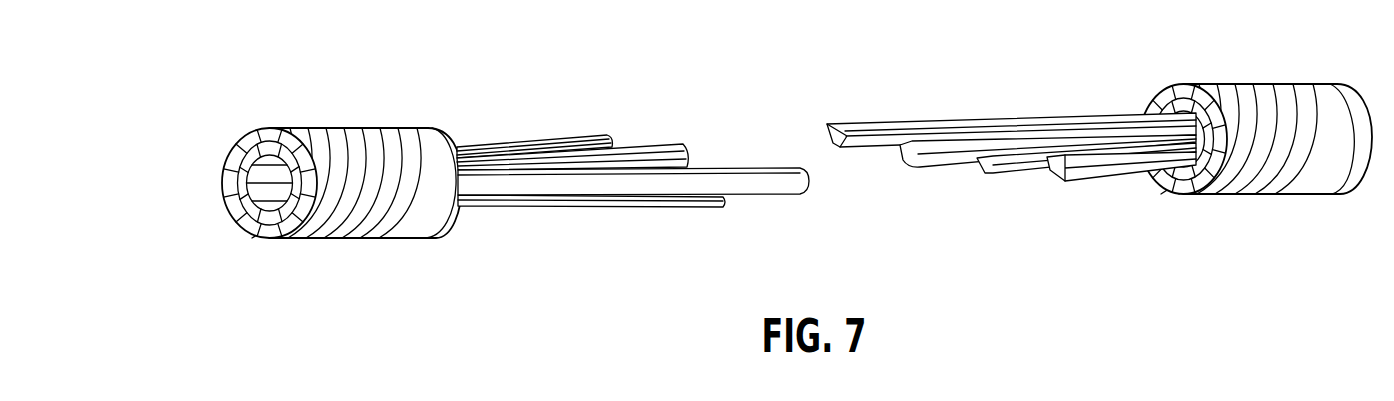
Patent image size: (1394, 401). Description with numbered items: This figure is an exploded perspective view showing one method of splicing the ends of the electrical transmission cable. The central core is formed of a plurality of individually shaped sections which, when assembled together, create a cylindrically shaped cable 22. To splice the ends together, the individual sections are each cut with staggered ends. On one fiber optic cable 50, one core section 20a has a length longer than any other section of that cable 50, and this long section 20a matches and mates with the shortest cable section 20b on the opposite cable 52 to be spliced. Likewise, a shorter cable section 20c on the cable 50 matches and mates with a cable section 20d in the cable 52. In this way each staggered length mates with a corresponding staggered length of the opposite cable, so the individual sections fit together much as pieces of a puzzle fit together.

The fiber optic cable 50 is at (357, 126).
The opposite cable 52 is at (1267, 83).
The cylindrically shaped cable 22 is at (666, 116).
The core section 20a is at (768, 198).
The cable section 20b is at (1142, 172).
The cable section 20c is at (512, 142).
The cable section 20d is at (882, 122).